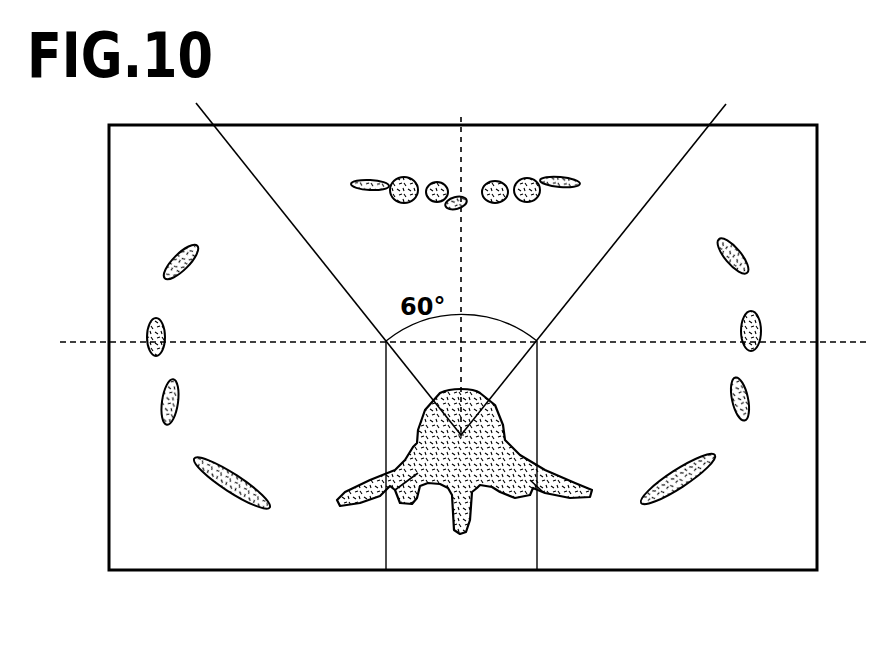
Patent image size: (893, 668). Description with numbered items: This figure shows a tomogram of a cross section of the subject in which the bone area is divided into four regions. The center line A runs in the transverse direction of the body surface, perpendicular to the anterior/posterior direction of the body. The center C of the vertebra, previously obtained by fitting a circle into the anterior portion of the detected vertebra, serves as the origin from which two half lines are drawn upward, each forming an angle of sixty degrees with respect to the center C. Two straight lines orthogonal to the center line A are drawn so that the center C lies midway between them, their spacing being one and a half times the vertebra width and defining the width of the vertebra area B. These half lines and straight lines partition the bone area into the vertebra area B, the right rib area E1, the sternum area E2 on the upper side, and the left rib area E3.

The center line A is at (452, 343).
The vertebra area B is at (460, 558).
The center of the vertebra C is at (461, 435).
The right rib area E1 is at (269, 558).
The sternum area E2 is at (570, 138).
The left rib area E3 is at (652, 558).